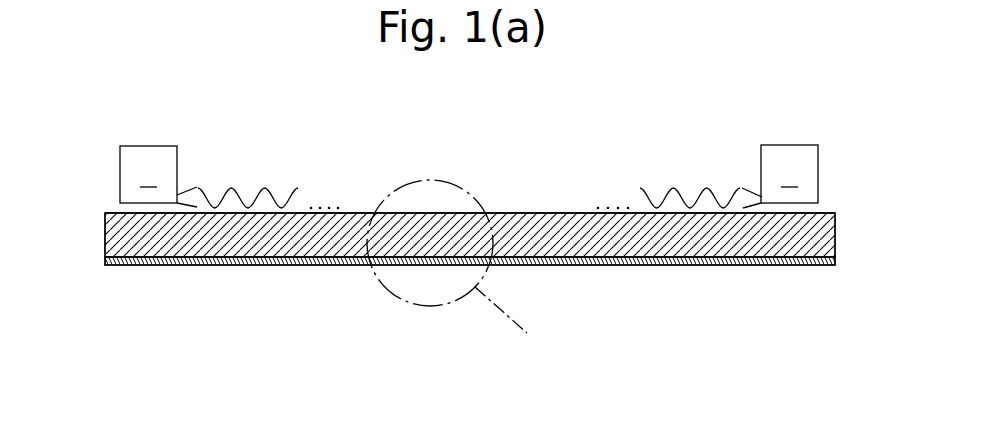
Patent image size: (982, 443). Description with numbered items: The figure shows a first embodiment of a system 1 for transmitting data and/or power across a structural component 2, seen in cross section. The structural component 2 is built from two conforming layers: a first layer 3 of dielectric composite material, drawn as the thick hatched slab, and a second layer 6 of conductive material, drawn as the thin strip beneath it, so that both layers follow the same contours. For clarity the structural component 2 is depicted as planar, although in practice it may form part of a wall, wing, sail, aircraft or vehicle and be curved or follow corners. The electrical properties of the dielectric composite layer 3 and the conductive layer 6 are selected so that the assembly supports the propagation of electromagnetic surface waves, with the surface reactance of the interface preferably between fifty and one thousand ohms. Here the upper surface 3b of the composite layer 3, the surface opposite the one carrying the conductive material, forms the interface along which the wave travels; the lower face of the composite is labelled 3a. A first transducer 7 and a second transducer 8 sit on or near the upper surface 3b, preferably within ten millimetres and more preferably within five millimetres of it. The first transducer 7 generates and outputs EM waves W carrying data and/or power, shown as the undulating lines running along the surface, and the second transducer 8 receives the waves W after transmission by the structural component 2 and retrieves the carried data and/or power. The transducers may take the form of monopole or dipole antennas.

The system 1 is at (711, 90).
The structural component 2 is at (840, 214).
The first layer 3 is at (104, 234).
The lower surface of light guide plate 3a is at (110, 246).
The upper surface 3b is at (109, 212).
The second layer 6 is at (167, 266).
The first transducer 7 is at (57, 93).
The second transducer 8 is at (883, 93).
The EM waves W is at (267, 188).